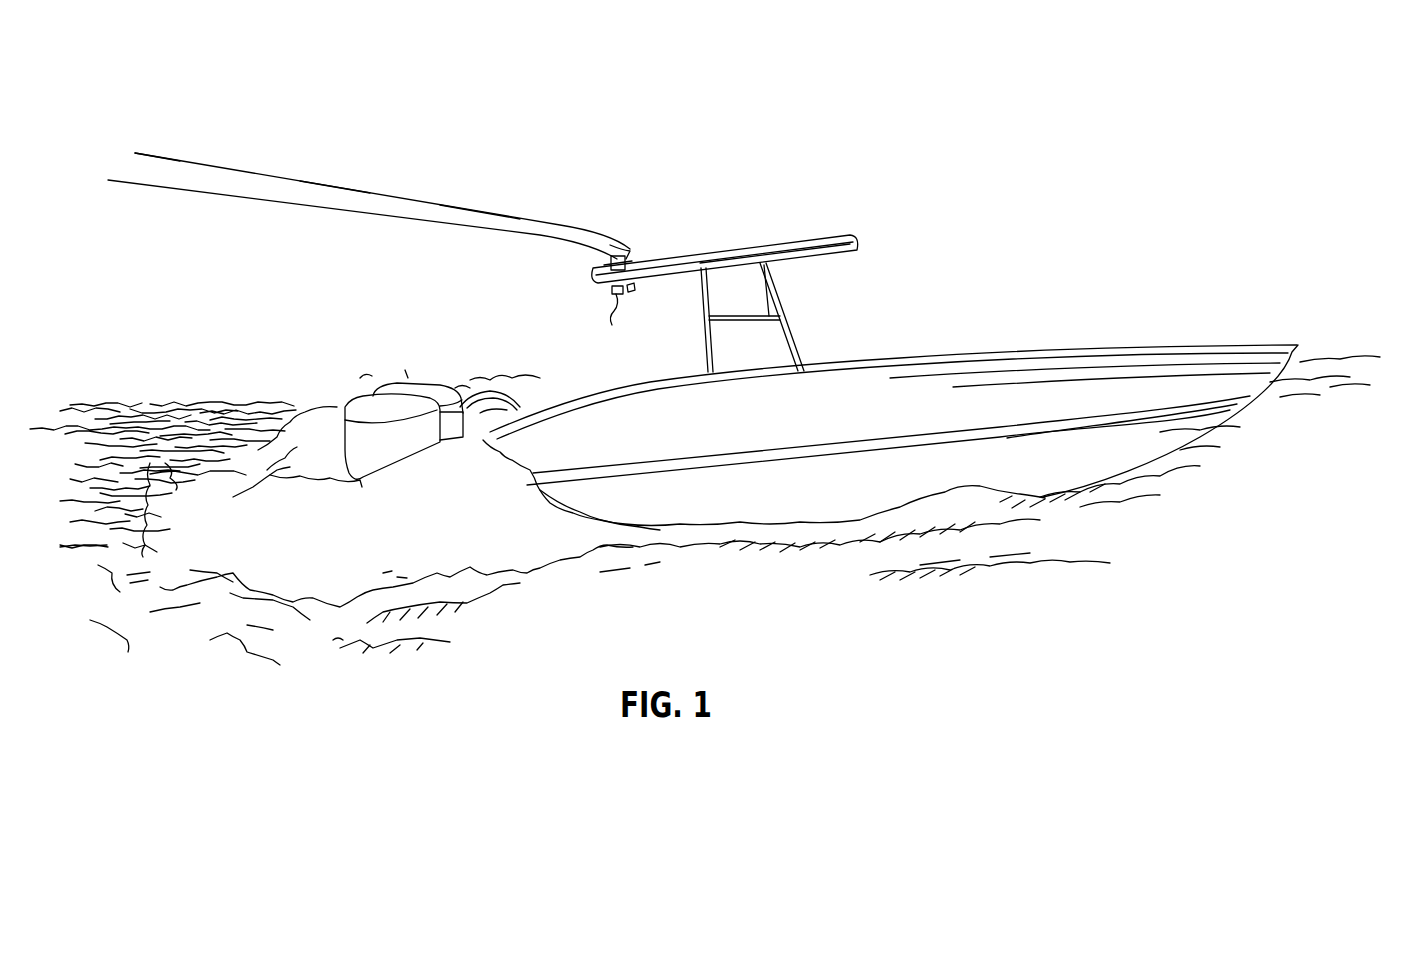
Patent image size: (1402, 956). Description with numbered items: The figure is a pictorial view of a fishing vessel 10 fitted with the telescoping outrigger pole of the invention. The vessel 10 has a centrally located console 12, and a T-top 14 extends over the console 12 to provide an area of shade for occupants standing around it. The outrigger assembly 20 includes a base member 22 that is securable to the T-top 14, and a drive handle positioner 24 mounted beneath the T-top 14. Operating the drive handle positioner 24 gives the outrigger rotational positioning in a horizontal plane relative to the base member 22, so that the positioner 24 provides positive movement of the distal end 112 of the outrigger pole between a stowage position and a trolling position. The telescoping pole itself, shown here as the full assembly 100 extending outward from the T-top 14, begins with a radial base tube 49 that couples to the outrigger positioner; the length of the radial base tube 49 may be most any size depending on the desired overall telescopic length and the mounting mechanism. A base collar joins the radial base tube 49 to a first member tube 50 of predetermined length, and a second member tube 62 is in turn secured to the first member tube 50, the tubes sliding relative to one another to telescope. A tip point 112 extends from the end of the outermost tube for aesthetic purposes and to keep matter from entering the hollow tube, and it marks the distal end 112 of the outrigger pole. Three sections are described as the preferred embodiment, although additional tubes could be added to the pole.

The fishing vessel 10 is at (1014, 347).
The console 12 is at (770, 328).
The T-top 14 is at (794, 236).
The outrigger assembly 20 is at (597, 297).
The base member 22 is at (604, 320).
The drive handle positioner 24 is at (630, 296).
The radial base tube 49 is at (633, 245).
The first member tube 50 is at (480, 203).
The second member tube 62 is at (335, 178).
The pole assembly 100 is at (224, 163).
The tip point 112 is at (145, 150).